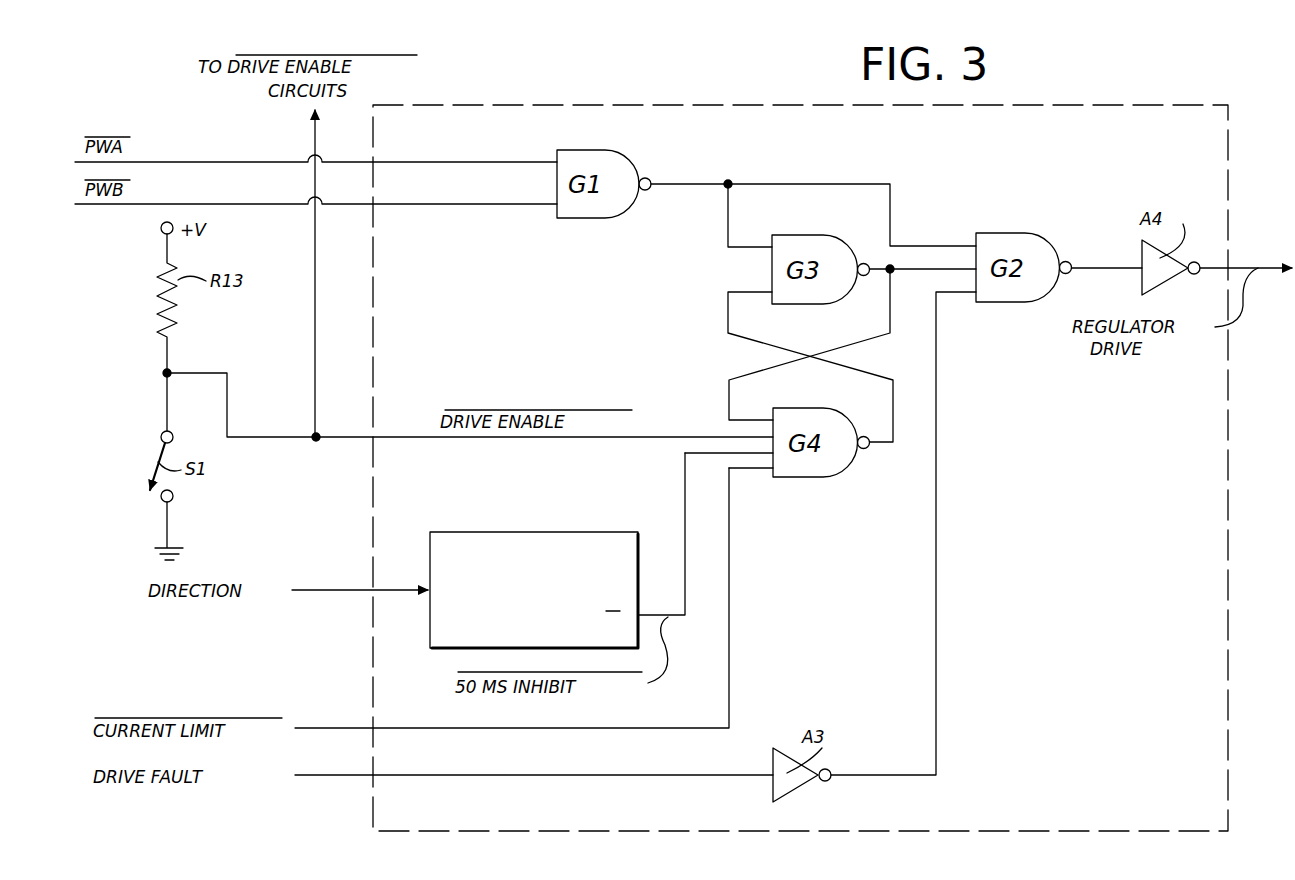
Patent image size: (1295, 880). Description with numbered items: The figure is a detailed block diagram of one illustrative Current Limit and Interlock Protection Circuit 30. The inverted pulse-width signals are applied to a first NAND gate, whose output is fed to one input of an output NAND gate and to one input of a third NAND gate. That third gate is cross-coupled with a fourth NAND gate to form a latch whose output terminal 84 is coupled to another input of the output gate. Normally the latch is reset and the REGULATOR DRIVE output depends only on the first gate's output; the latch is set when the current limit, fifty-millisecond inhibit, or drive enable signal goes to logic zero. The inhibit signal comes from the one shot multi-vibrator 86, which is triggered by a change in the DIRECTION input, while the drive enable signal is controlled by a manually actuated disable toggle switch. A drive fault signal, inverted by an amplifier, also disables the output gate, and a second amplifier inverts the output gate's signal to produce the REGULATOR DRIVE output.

The Current Limit and Interlock Protection Circuit 30 is at (1230, 186).
The output terminal 84 is at (889, 266).
The one shot multi-vibrator 86 is at (535, 532).